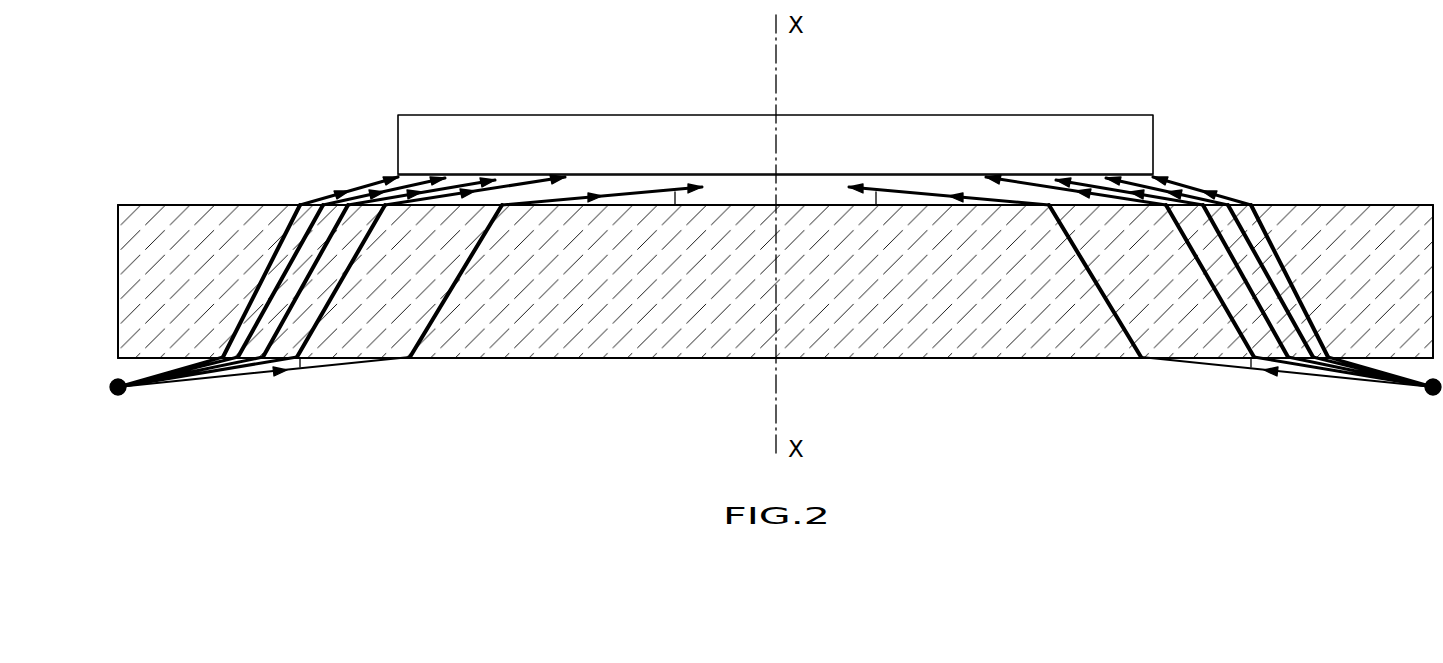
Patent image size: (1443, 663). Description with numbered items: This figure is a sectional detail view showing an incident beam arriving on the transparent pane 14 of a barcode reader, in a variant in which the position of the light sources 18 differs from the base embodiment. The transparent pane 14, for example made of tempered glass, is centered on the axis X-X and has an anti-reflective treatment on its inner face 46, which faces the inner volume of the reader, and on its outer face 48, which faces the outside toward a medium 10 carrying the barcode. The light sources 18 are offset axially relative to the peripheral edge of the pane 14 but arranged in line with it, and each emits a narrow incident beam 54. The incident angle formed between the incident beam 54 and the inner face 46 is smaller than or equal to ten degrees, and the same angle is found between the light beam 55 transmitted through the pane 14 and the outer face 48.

The medium comprising a barcode 10 is at (750, 114).
The transparent pane 14 is at (190, 150).
The light sources 18 is at (118, 399).
The inner face 46 is at (625, 359).
The outer face 48 is at (258, 204).
The incident beam 54 is at (350, 361).
The transmitted light beam 55 is at (648, 187).